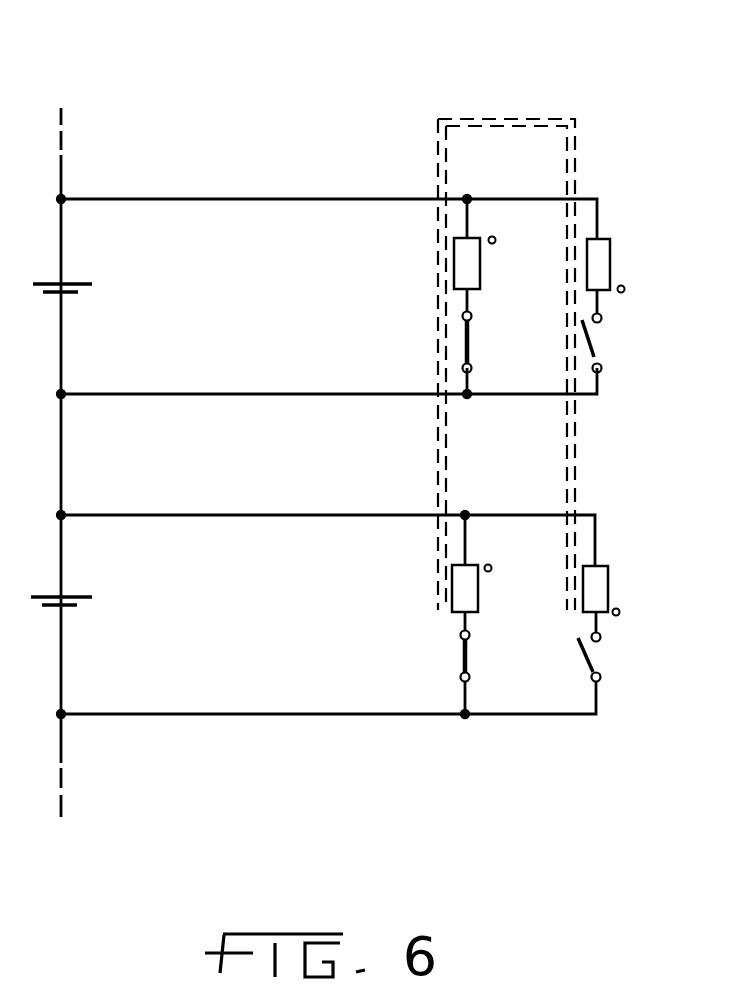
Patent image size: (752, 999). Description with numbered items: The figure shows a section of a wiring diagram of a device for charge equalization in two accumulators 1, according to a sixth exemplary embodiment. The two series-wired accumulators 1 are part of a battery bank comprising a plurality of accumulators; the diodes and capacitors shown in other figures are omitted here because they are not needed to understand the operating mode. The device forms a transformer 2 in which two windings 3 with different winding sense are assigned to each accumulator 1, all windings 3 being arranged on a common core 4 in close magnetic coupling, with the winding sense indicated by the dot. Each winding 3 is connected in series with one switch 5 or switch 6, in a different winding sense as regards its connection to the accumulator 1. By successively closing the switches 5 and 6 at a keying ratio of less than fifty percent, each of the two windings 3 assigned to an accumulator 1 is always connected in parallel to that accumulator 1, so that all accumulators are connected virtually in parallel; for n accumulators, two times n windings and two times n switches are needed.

The accumulator 1 is at (82, 283).
The transformer 2 is at (418, 123).
The winding 3 is at (610, 258).
The common core 4 is at (530, 124).
The switch 5 is at (467, 345).
The switch 6 is at (596, 342).